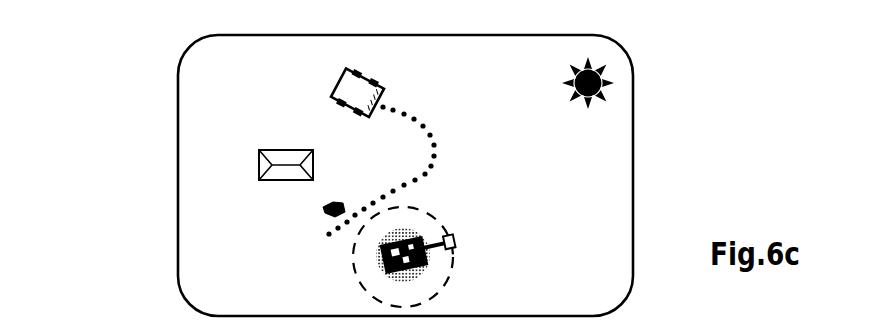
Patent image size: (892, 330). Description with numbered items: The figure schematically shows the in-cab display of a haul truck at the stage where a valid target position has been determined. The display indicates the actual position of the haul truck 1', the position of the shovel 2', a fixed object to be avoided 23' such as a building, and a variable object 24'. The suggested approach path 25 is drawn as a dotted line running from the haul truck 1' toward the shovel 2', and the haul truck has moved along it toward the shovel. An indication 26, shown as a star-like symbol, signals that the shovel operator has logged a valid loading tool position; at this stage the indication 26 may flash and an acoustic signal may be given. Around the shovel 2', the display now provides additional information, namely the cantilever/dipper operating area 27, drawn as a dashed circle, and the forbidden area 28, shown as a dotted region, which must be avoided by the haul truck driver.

The haul truck position 1' is at (324, 87).
The shovel position 2' is at (458, 230).
The fixed object to be avoided 23' is at (184, 119).
The variable object 24' is at (284, 229).
The suggested approach path 25 is at (433, 170).
The indication 26 is at (638, 63).
The cantilever/dipper operating area 27 is at (443, 257).
The forbidden area 28 is at (346, 267).